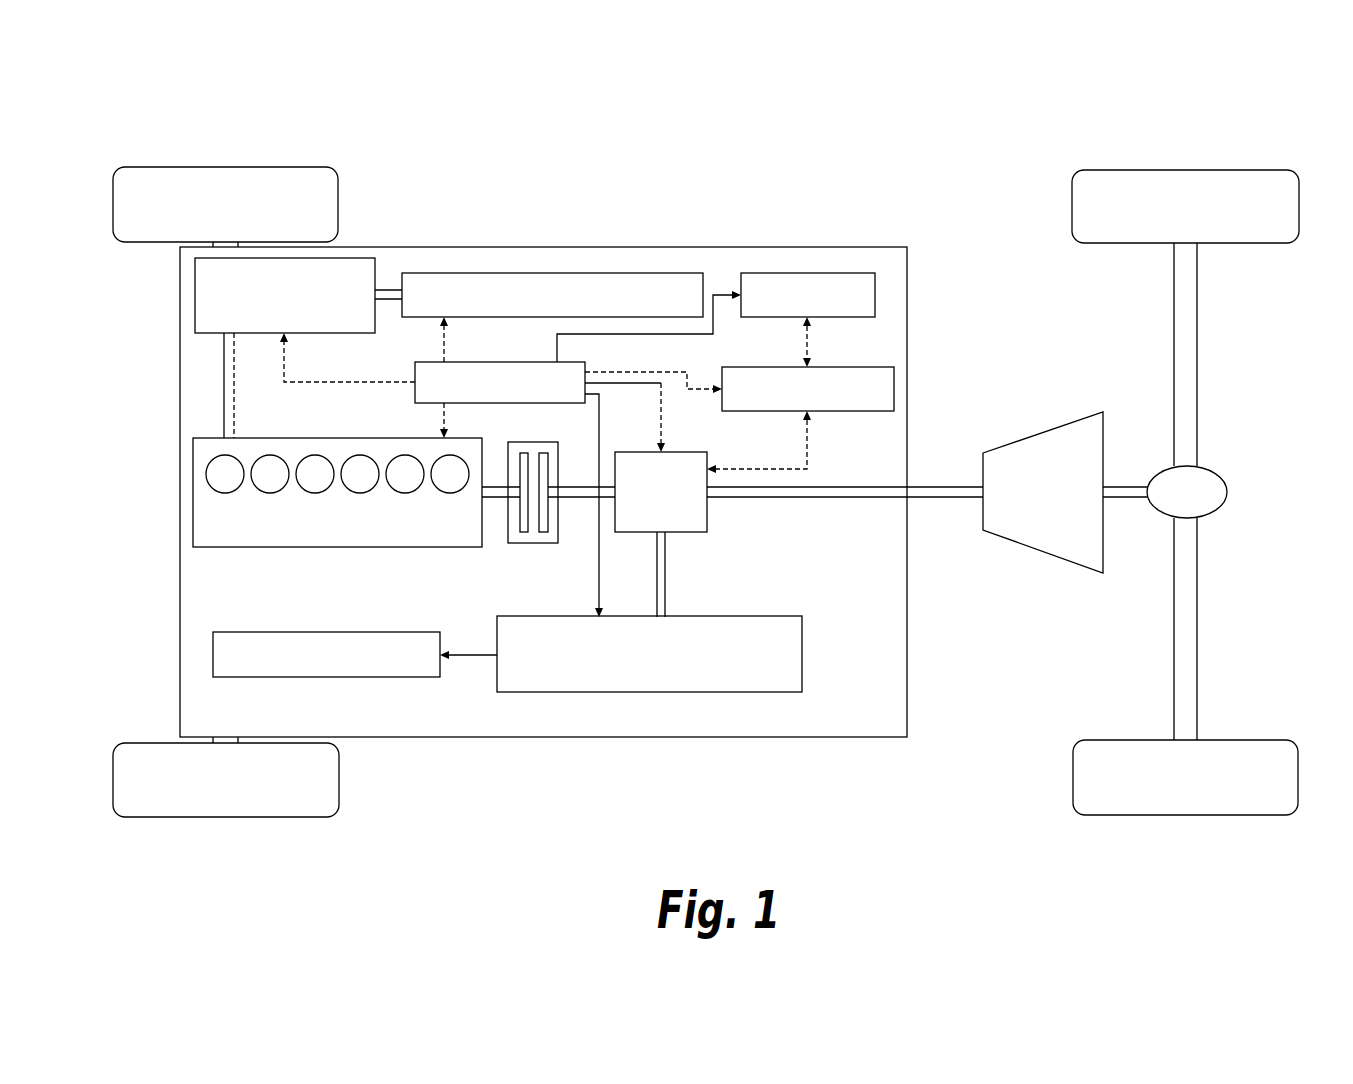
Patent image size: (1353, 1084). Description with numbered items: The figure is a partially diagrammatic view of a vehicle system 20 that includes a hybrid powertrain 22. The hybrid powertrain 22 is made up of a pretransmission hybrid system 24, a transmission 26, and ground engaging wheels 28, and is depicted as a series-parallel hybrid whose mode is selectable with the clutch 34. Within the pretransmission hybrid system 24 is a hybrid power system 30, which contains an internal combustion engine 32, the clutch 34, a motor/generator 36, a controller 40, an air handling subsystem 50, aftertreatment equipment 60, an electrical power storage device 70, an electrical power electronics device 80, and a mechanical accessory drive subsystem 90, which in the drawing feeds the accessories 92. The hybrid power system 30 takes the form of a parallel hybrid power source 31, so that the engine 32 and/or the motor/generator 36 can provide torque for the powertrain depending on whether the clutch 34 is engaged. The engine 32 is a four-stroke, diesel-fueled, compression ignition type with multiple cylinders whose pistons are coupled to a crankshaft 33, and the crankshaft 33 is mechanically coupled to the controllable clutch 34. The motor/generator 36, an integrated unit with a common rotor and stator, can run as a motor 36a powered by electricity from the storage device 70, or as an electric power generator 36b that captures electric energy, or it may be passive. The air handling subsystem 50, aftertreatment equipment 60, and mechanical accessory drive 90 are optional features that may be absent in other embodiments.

The vehicle system 20 is at (840, 120).
The hybrid powertrain 22 is at (978, 342).
The pretransmission hybrid system 24 is at (558, 745).
The transmission 26 is at (1038, 550).
The ground engaging wheels 28 is at (200, 167).
The hybrid power system 30 is at (590, 247).
The parallel hybrid power source 31 is at (768, 569).
The internal combustion engine 32 is at (366, 547).
The crankshaft 33 is at (495, 498).
The clutch 34 is at (540, 543).
The motor/generator 36 is at (707, 512).
The motor 36a is at (680, 450).
The electric power generator 36b is at (625, 532).
The controller 40 is at (415, 398).
The air handling subsystem 50 is at (194, 290).
The aftertreatment equipment 60 is at (445, 273).
The electrical power storage device 70 is at (807, 273).
The electrical power electronics device 80 is at (868, 411).
The mechanical accessory drive subsystem 90 is at (727, 616).
The accessories 92 is at (263, 632).